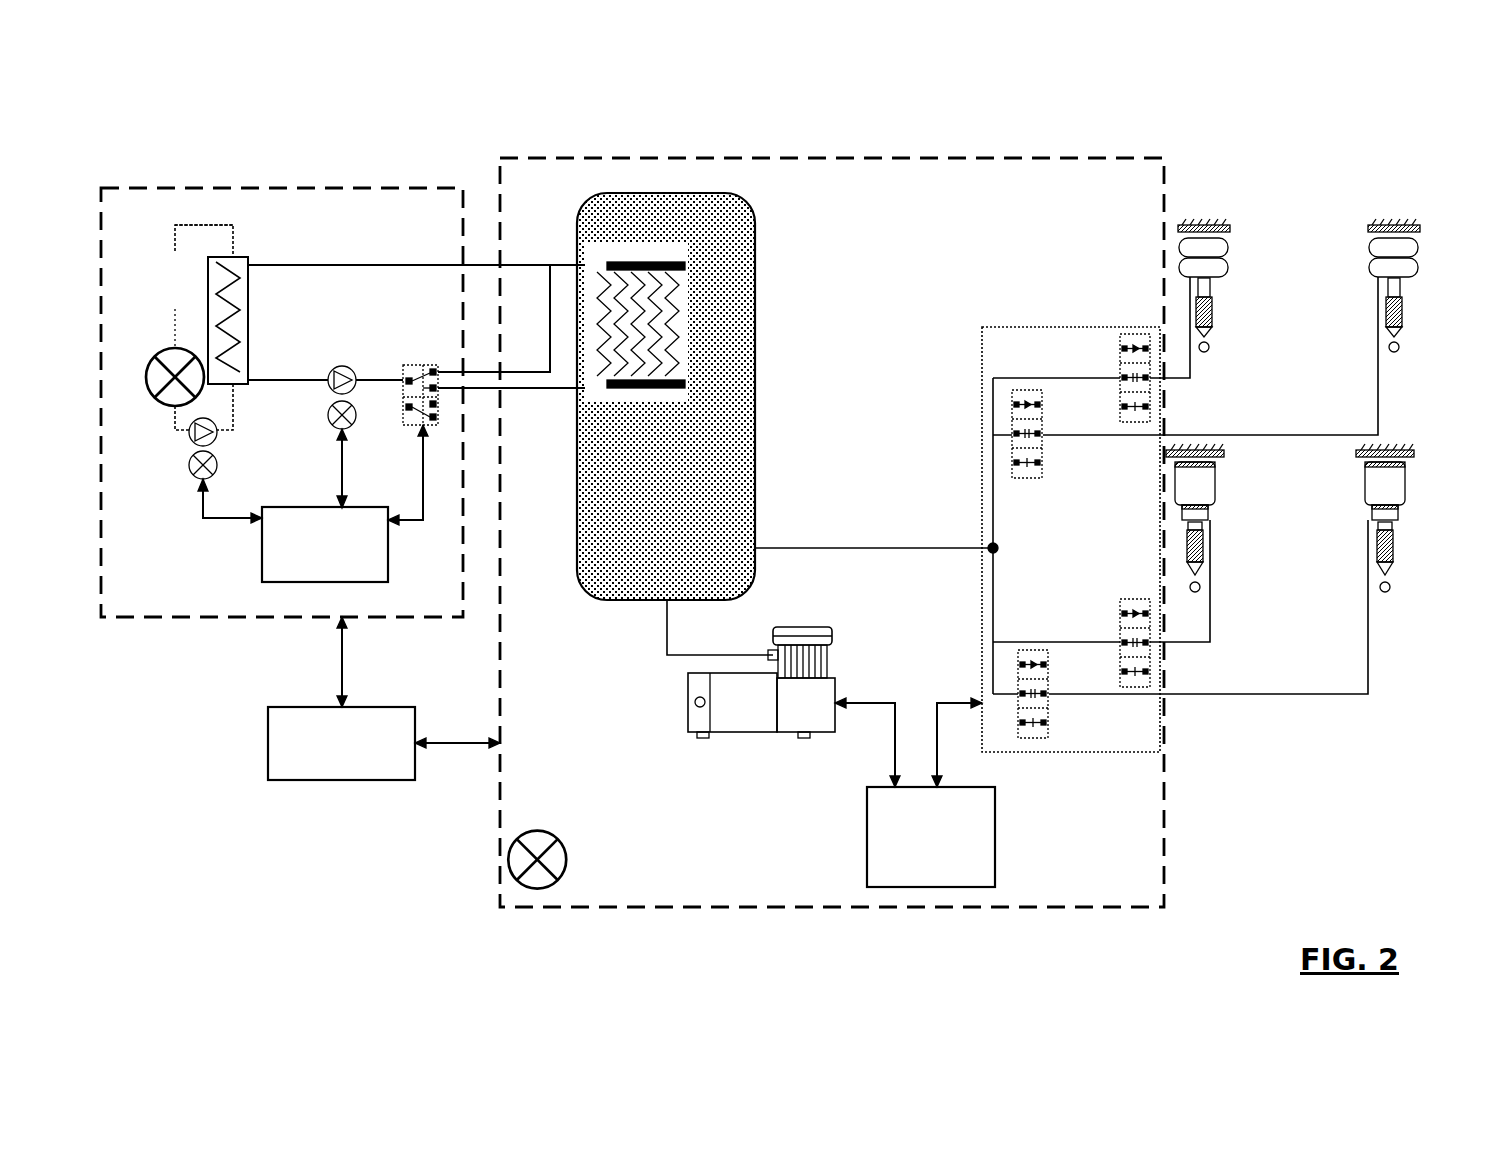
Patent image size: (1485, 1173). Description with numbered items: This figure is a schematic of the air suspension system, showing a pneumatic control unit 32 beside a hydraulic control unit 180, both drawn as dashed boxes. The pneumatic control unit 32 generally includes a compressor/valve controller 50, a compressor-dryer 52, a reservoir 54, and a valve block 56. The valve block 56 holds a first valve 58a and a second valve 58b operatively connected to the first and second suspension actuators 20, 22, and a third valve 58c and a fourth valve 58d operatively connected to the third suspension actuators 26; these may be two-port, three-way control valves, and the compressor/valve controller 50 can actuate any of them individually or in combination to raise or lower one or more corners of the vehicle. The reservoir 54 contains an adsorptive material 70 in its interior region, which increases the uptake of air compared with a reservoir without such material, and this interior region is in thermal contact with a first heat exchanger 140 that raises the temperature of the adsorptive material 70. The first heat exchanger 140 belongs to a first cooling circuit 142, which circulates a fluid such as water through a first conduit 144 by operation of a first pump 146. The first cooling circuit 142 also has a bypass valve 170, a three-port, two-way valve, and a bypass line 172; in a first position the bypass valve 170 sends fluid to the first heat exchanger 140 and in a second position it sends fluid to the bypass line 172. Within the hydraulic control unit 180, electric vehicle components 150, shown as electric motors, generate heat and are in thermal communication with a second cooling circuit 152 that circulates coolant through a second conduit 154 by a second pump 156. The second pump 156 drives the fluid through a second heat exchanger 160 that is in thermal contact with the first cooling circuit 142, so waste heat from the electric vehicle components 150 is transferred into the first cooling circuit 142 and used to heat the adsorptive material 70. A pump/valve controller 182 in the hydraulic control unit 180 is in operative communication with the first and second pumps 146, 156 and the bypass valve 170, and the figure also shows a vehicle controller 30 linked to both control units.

The hydraulic control unit 180 is at (285, 188).
The pneumatic control unit 32 is at (768, 158).
The electric vehicle components 150 is at (182, 303).
The second cooling circuit 152 is at (188, 215).
The second conduit 154 is at (210, 225).
The second heat exchanger 160 is at (245, 257).
The first cooling circuit 142 is at (341, 252).
The first conduit 144 is at (410, 268).
The first pump 146 is at (340, 365).
The bypass valve 170 is at (418, 365).
The bypass line 172 is at (475, 372).
The second pump 156 is at (216, 440).
The pump/valve controller 182 is at (262, 565).
The vehicle controller 30 is at (385, 707).
The reservoir 54 is at (756, 280).
The adsorptive material 70 is at (720, 435).
The first heat exchanger 140 is at (600, 250).
The compressor-dryer 52 is at (688, 712).
The compressor/valve controller 50 is at (867, 833).
The valve block 56 is at (1038, 327).
The first valve 58a is at (1120, 360).
The second valve 58b is at (1043, 470).
The third valve 58c is at (1120, 605).
The fourth valve 58d is at (1049, 712).
The first suspension actuator 20 is at (1203, 245).
The second suspension actuator 22 is at (1393, 248).
The third suspension actuators 26 is at (1205, 487).